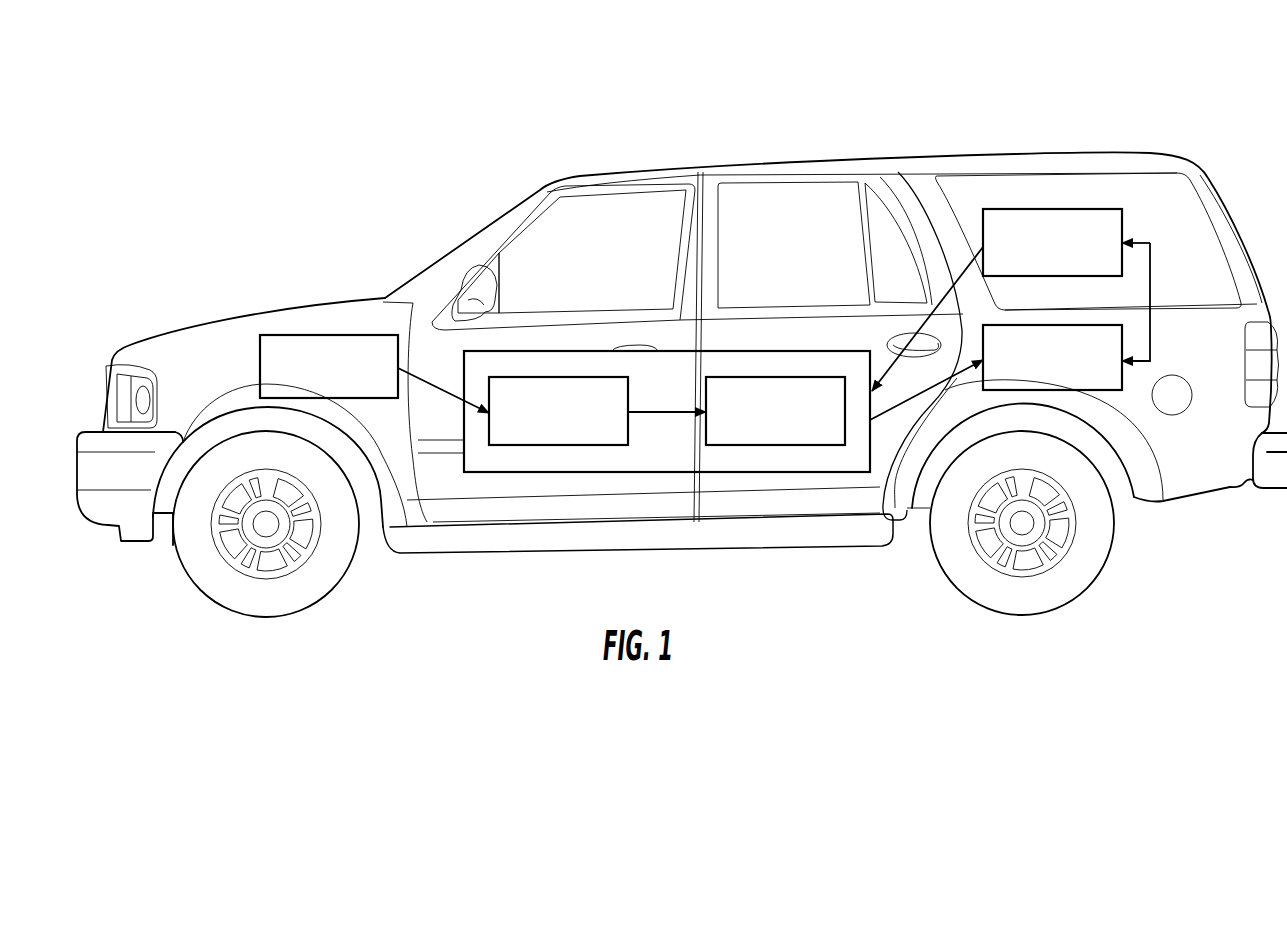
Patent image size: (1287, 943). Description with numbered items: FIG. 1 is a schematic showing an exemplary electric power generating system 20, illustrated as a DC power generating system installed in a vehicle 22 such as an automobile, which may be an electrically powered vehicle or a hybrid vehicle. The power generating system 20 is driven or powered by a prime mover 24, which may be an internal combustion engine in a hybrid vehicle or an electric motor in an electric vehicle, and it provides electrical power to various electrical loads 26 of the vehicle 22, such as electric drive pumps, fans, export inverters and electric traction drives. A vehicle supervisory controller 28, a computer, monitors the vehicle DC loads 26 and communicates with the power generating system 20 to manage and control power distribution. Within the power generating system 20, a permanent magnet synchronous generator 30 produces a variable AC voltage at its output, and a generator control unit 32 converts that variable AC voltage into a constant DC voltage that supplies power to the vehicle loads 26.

The electric power generating system 20 is at (729, 476).
The vehicle 22 is at (936, 155).
The prime mover 24 is at (315, 382).
The electrical loads 26 is at (1038, 373).
The vehicle supervisory controller 28 is at (1038, 258).
The permanent magnet synchronous generator 30 is at (545, 427).
The generator control unit 32 is at (762, 427).